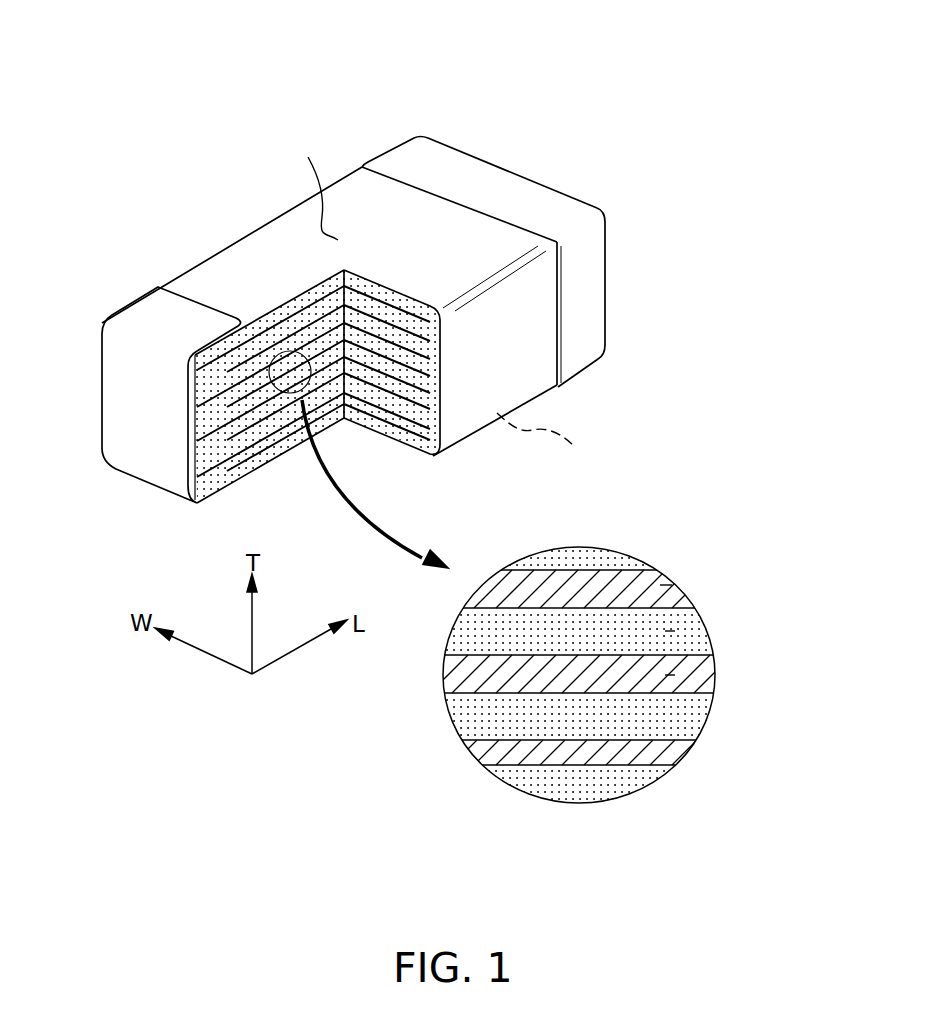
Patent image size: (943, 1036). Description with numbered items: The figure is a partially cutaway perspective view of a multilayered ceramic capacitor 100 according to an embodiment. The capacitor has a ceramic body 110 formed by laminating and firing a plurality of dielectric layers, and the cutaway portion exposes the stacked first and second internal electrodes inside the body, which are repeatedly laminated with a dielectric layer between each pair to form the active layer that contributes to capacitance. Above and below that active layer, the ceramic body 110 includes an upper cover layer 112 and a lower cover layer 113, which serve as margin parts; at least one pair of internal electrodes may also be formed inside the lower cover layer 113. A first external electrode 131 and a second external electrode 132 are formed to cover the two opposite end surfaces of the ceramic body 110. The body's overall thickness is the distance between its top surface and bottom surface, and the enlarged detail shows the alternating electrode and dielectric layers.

The multilayered ceramic capacitor 100 is at (387, 36).
The ceramic body 110 is at (222, 237).
The upper cover layer 112 is at (302, 293).
The lower cover layer 113 is at (205, 462).
The first external electrode 131 is at (146, 313).
The second external electrode 132 is at (507, 181).